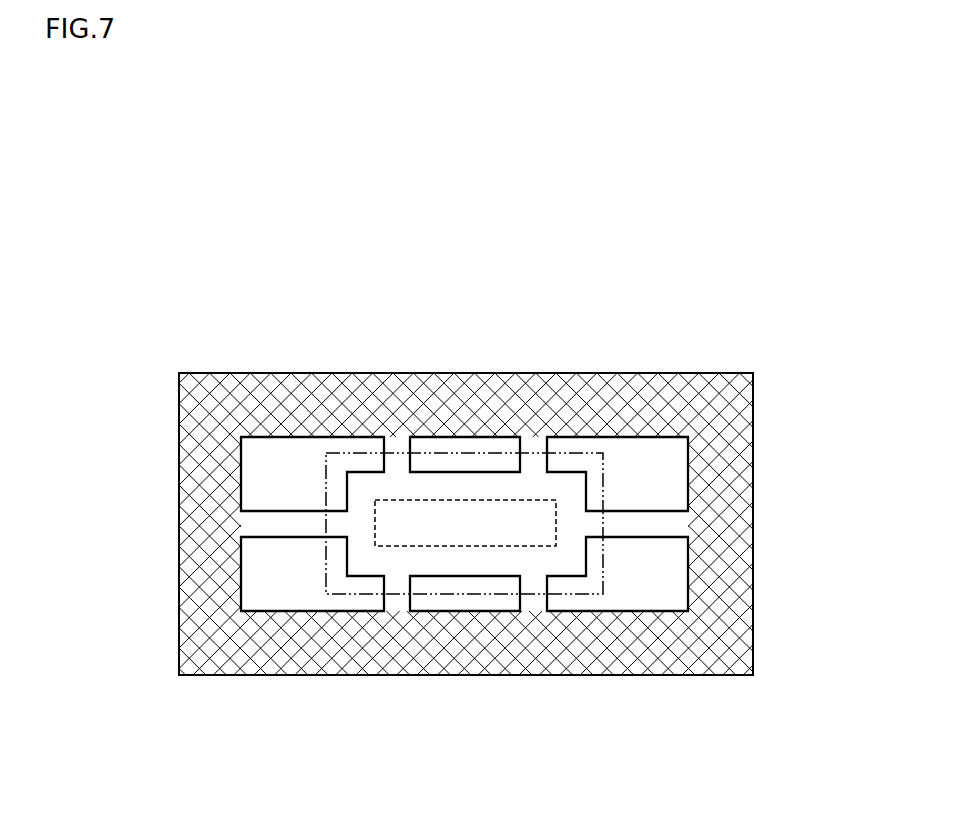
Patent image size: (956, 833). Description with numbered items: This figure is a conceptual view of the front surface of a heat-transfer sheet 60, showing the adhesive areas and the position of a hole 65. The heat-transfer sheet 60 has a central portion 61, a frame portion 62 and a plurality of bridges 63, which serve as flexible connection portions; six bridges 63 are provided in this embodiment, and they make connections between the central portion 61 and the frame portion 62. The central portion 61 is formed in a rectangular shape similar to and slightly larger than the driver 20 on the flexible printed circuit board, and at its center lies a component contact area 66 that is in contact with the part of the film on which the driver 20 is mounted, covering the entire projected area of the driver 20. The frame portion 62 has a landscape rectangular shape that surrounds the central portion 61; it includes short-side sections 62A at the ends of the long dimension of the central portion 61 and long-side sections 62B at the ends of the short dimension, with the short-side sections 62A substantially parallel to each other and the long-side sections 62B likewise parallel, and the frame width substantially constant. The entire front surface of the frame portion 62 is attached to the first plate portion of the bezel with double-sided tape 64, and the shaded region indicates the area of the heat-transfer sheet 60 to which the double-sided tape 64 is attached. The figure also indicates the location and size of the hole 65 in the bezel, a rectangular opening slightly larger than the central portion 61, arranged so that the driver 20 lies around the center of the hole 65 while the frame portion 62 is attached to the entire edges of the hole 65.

The heat-transfer sheet 60 is at (441, 267).
The central portion 61 is at (455, 482).
The frame portion 62 is at (303, 384).
The short-side section 62A is at (200, 518).
The long-side section 62B is at (590, 403).
The bridge 63 is at (650, 523).
The double-sided tape 64 is at (743, 575).
The hole 65 is at (603, 557).
The component contact area 66 is at (444, 528).
The driver 20 is at (392, 528).